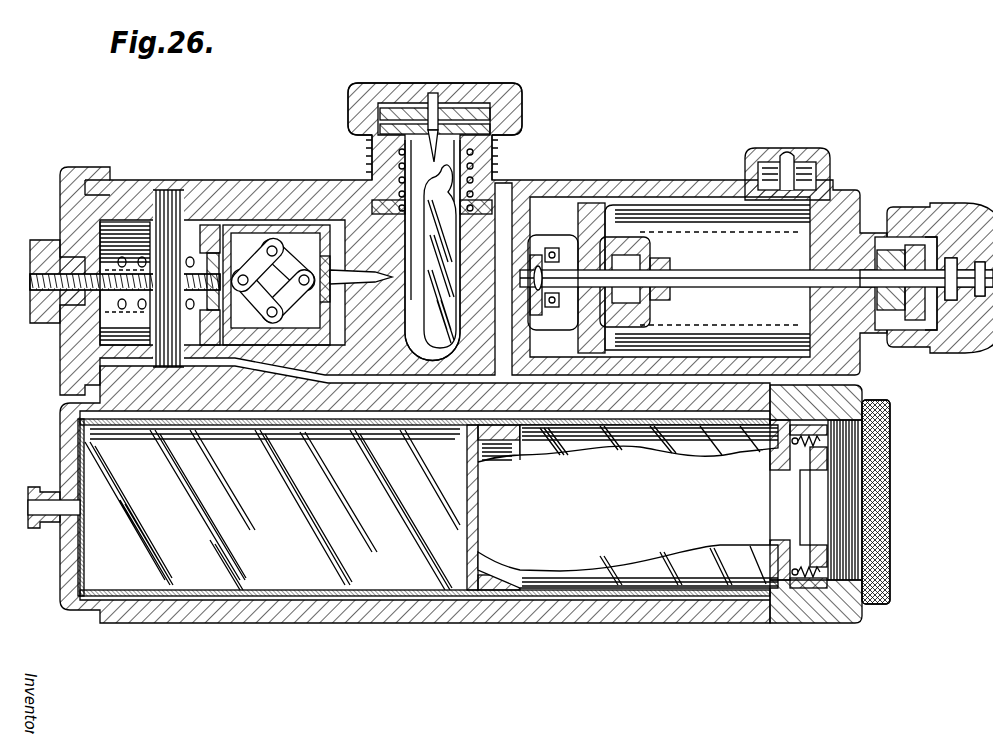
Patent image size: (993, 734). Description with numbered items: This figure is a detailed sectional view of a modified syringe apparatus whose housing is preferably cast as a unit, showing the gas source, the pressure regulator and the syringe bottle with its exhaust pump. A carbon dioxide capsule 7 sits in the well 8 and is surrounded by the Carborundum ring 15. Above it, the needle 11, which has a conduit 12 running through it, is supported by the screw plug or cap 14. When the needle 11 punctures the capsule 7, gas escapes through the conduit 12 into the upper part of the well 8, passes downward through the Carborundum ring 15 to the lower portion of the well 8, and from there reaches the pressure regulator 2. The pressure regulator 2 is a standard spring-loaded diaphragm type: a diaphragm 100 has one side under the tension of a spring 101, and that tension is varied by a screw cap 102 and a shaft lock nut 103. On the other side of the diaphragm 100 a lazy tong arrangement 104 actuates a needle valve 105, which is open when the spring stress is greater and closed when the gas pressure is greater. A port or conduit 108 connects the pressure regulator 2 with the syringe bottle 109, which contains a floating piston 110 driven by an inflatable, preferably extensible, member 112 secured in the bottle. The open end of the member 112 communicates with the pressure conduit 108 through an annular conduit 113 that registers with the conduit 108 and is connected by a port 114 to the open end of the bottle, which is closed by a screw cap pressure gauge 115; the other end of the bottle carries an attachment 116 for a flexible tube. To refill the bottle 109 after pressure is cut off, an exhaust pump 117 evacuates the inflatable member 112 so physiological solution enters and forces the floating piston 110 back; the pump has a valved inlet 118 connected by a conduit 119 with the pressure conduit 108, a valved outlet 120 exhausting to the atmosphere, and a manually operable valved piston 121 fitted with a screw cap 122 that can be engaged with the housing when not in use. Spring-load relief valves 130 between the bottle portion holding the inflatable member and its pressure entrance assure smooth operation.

The pressure regulator 2 is at (312, 238).
The carbon dioxide capsule 7 is at (436, 248).
The well 8 is at (473, 182).
The needle 11 is at (436, 120).
The conduit 12 is at (426, 110).
The screw plug or cap 14 is at (490, 95).
The Carborundum ring 15 is at (388, 213).
The diaphragm 100 is at (197, 235).
The spring 101 is at (132, 255).
The screw cap 102 is at (72, 353).
The shaft lock nut 103 is at (55, 330).
The lazy tong arrangement 104 is at (258, 228).
The needle valve 105 is at (385, 274).
The port or conduit 108 is at (407, 380).
The syringe bottle 109 is at (427, 577).
The floating piston 110 is at (463, 573).
The inflatable member 112 is at (563, 562).
The annular conduit 113 is at (860, 392).
The port 114 is at (891, 407).
The screw cap pressure gauge 115 is at (891, 448).
The attachment 116 is at (33, 490).
The exhaust pump 117 is at (624, 208).
The valved inlet 118 is at (553, 292).
The conduit 119 is at (510, 375).
The valved outlet 120 is at (823, 175).
The valved piston 121 is at (610, 341).
The screw cap 122 is at (931, 214).
The spring-load relief valves 130 is at (788, 441).